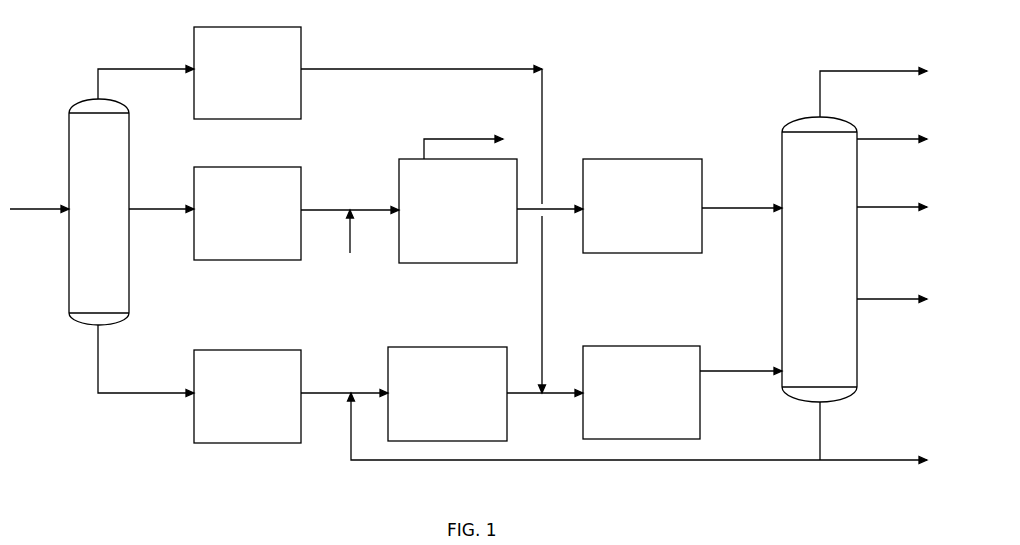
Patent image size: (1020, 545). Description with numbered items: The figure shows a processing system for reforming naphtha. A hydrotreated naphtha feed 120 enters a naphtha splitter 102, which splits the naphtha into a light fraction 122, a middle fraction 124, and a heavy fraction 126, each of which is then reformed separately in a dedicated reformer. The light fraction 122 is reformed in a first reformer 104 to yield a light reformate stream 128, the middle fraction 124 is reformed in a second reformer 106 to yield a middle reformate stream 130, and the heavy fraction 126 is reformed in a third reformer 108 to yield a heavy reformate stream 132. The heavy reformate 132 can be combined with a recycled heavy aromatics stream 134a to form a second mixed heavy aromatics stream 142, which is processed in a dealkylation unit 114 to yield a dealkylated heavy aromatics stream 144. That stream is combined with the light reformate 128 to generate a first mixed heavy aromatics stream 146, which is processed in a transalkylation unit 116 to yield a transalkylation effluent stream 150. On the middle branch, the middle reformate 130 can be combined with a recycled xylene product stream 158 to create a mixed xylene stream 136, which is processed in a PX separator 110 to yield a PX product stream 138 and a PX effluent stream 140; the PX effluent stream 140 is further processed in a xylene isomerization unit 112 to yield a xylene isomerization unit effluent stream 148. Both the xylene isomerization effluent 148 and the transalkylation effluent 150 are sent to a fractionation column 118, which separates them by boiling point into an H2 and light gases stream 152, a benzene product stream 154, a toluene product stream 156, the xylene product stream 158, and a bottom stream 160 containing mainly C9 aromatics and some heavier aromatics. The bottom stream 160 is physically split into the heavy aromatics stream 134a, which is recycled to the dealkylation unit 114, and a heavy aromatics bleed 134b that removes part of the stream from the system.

The naphtha splitter 102 is at (99, 212).
The first reformer 104 is at (247, 73).
The second reformer 106 is at (247, 213).
The third reformer 108 is at (247, 396).
The PX separator 110 is at (458, 211).
The xylene isomerization unit 112 is at (642, 206).
The dealkylation unit 114 is at (447, 394).
The transalkylation unit 116 is at (641, 392).
The fractionation column 118 is at (819, 259).
The hydrotreated naphtha feed 120 is at (39, 202).
The light fraction 122 is at (146, 76).
The middle fraction 124 is at (161, 202).
The heavy fraction 126 is at (146, 361).
The light reformate stream 128 is at (423, 223).
The middle reformate stream 130 is at (325, 200).
The heavy reformate stream 132 is at (326, 384).
The heavy aromatics stream 134a is at (584, 426).
The heavy aromatics bleed 134b is at (873, 453).
The mixed xylene stream 136 is at (374, 202).
The PX product stream 138 is at (464, 141).
The PX effluent stream 140 is at (550, 203).
The second mixed heavy aromatics stream 142 is at (369, 386).
The dealkylated heavy aromatics stream 144 is at (524, 384).
The first mixed heavy aromatics stream 146 is at (562, 402).
The xylene isomerization unit effluent stream 148 is at (742, 200).
The transalkylation effluent stream 150 is at (741, 364).
The H2 and light gases stream 152 is at (873, 85).
The benzene product stream 154 is at (892, 132).
The toluene product stream 156 is at (892, 201).
The xylene product stream 158 is at (623, 256).
The bottom stream 160 is at (833, 431).